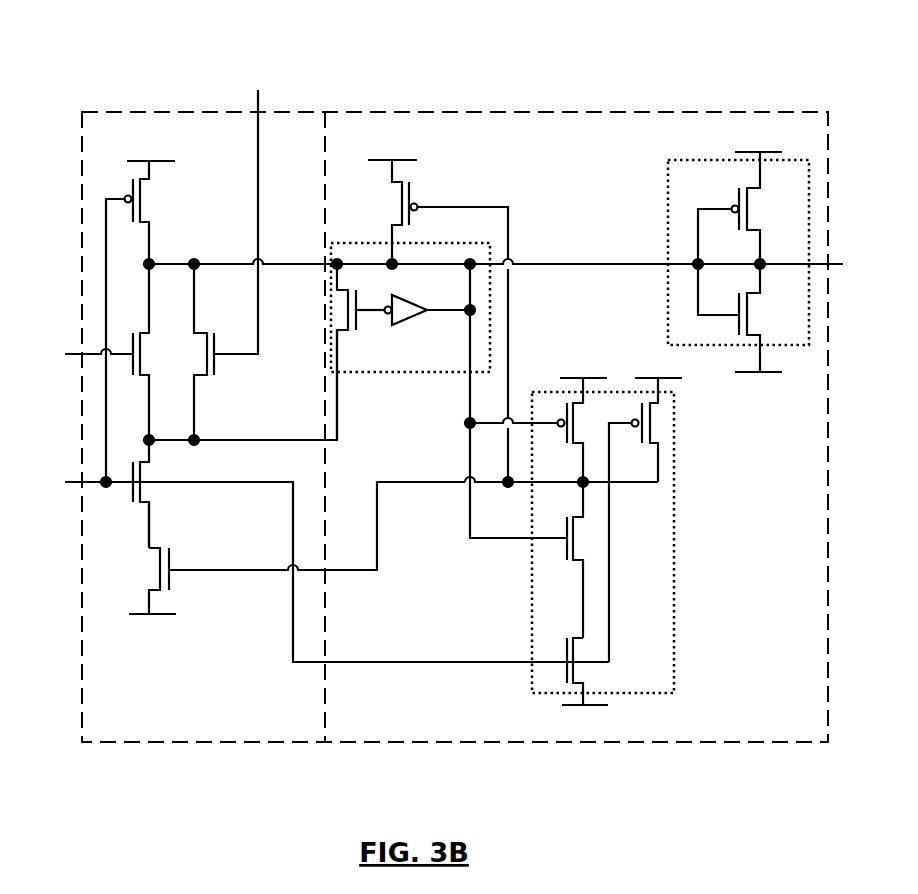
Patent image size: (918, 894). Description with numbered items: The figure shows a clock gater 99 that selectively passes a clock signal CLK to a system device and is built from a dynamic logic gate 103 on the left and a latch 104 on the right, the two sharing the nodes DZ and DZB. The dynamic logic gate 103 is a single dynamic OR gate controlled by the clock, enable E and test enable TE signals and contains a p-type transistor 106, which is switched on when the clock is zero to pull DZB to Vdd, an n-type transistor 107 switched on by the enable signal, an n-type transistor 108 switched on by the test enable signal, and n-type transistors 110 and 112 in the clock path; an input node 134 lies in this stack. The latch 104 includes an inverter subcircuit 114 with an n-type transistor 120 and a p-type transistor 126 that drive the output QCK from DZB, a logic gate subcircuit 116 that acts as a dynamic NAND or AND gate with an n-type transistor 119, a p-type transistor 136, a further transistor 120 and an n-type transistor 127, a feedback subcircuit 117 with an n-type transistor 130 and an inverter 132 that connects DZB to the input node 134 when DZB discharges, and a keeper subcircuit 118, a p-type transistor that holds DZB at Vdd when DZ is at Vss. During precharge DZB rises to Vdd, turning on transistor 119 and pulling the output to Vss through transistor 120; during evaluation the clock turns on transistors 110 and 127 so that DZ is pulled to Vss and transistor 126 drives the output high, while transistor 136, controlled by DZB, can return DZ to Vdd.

The clock gater 99 is at (671, 60).
The dynamic logic gate 103 is at (181, 112).
The latch 104 is at (514, 112).
The p-type transistor 106 is at (143, 199).
The n-type transistor 107 is at (142, 350).
The n-type transistor 108 is at (215, 364).
The n-type transistor 110 is at (146, 463).
The n-type transistor 112 is at (171, 563).
The inverter subcircuit 114 is at (668, 192).
The logic gate subcircuit 116 is at (674, 541).
The feedback subcircuit 117 is at (379, 243).
The keeper subcircuit 118 is at (412, 195).
The n-type transistor 119 is at (565, 548).
The n-type transistor 120 is at (749, 302).
The p-type transistor 126 is at (749, 194).
The n-type transistor 127 is at (565, 650).
The n-type transistor 130 is at (354, 330).
The inverter 132 is at (421, 298).
The input node 134 is at (152, 522).
The p-type transistor 136 is at (577, 413).